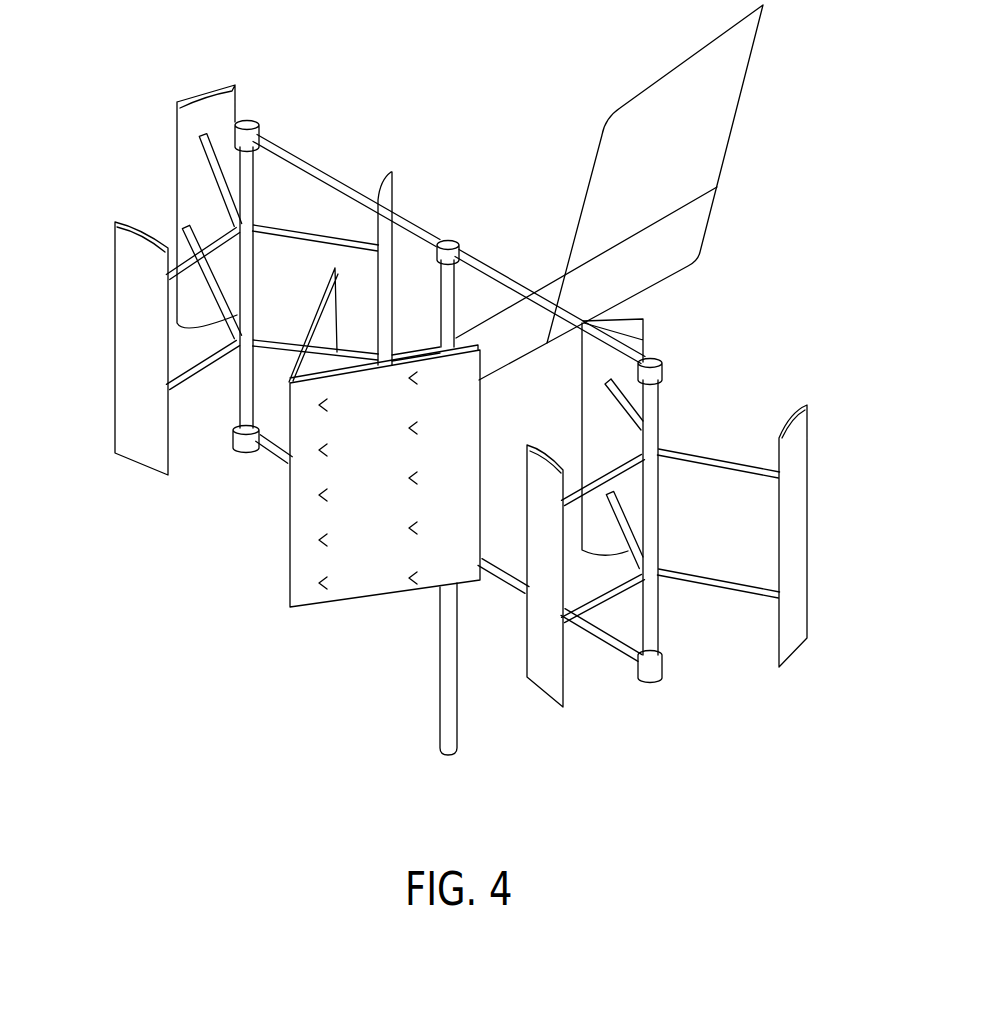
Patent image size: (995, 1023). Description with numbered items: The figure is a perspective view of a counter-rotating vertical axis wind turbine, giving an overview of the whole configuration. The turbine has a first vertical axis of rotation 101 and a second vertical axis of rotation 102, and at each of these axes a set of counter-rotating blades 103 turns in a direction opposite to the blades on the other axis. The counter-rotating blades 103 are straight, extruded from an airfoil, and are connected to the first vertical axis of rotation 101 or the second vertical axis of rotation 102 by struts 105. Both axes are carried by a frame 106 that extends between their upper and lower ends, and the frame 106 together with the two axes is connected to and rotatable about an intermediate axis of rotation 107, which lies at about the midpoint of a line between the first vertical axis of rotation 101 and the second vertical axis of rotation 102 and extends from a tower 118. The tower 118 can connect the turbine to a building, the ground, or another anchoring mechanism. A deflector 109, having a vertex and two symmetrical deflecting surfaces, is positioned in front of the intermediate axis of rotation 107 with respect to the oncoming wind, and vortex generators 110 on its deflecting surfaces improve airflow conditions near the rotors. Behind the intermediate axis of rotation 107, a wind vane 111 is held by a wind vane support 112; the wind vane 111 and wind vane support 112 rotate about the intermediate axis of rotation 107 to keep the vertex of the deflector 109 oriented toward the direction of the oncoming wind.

The first vertical axis of rotation 101 is at (660, 403).
The second vertical axis of rotation 102 is at (238, 397).
The counter-rotating blades 103 is at (115, 340).
The struts 105 is at (173, 262).
The frame 106 is at (310, 167).
The intermediate axis of rotation 107 is at (448, 292).
The deflector 109 is at (285, 608).
The vortex generators 110 is at (413, 585).
The wind vane 111 is at (740, 106).
The wind vane support 112 is at (661, 283).
The tower 118 is at (457, 665).